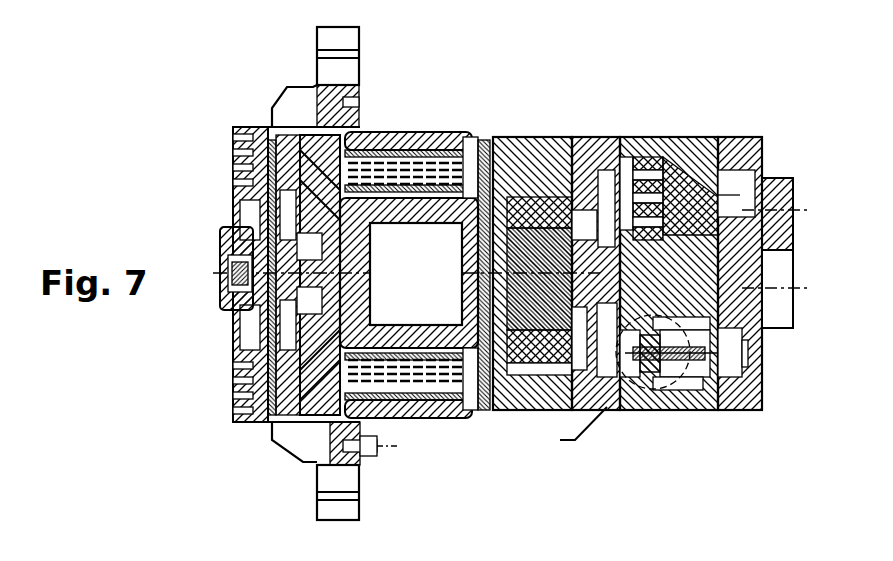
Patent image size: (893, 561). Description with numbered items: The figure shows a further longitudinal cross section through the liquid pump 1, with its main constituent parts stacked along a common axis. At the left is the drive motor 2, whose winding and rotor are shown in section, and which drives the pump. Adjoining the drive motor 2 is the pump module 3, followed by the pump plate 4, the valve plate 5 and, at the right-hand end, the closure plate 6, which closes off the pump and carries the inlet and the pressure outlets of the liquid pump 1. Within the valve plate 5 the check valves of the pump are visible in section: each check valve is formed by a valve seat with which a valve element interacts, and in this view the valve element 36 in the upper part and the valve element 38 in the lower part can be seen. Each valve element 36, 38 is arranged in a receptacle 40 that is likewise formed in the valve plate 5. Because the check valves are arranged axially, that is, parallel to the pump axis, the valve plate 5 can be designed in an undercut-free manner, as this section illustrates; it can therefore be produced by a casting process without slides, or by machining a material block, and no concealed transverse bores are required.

The liquid pump 1 is at (466, 452).
The drive motor 2 is at (400, 132).
The pump module 3 is at (623, 120).
The pump plate 4 is at (587, 137).
The valve plate 5 is at (653, 140).
The valve element 36 is at (681, 150).
The closure plate 6 is at (731, 143).
The valve element 38 is at (661, 370).
The receptacle 40 is at (708, 378).